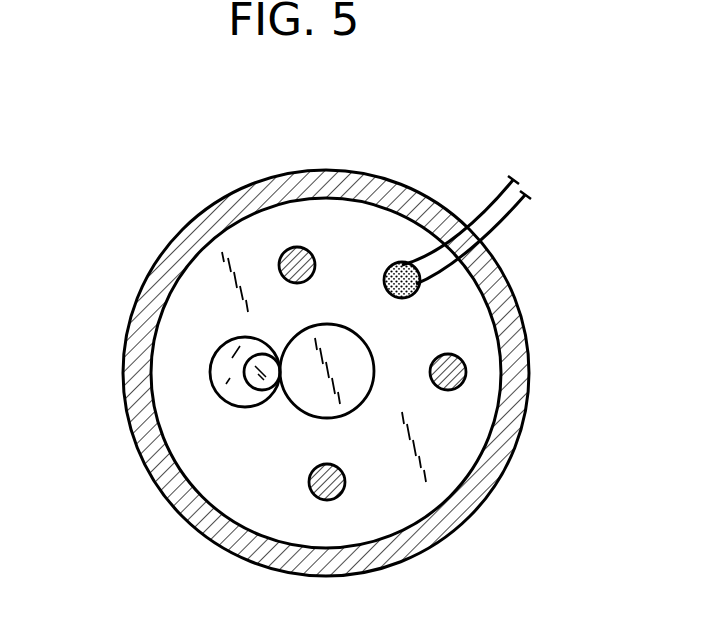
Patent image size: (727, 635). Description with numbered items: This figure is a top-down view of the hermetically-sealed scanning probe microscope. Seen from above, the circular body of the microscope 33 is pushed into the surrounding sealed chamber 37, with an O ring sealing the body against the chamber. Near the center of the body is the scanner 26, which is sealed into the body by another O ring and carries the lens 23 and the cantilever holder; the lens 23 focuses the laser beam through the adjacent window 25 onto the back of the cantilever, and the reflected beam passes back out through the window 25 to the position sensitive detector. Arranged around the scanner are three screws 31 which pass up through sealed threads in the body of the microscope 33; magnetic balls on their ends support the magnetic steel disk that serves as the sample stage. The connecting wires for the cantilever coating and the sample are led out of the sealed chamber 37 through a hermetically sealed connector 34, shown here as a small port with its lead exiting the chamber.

The lens 23 is at (262, 357).
The window 25 is at (215, 375).
The scanner 26 is at (343, 397).
The screws 31 is at (302, 250).
The body of the microscope 33 is at (385, 520).
The hermetically sealed connector 34 is at (408, 297).
The sealed chamber 37 is at (487, 478).